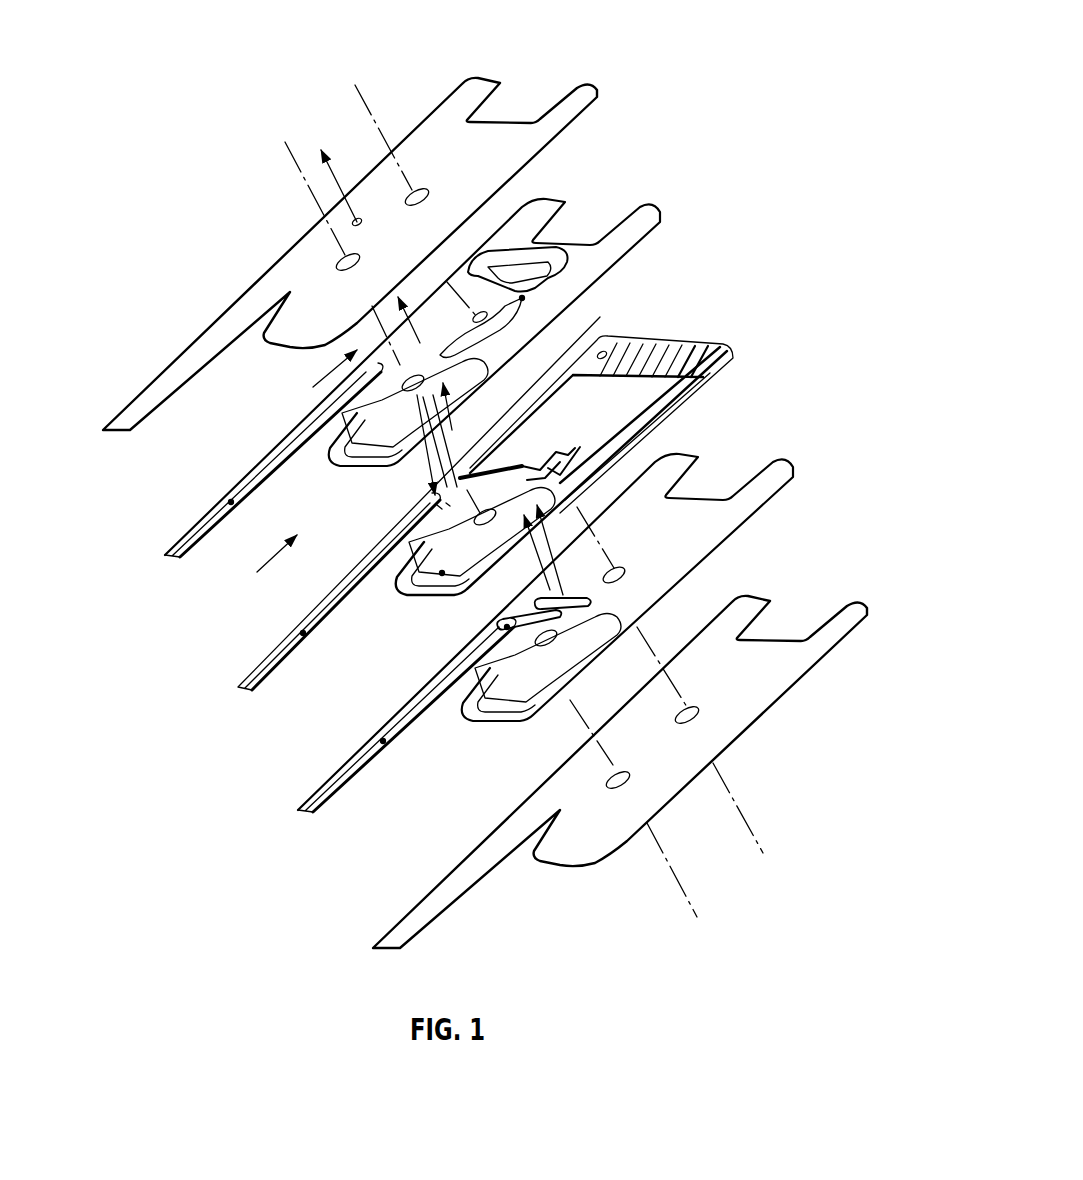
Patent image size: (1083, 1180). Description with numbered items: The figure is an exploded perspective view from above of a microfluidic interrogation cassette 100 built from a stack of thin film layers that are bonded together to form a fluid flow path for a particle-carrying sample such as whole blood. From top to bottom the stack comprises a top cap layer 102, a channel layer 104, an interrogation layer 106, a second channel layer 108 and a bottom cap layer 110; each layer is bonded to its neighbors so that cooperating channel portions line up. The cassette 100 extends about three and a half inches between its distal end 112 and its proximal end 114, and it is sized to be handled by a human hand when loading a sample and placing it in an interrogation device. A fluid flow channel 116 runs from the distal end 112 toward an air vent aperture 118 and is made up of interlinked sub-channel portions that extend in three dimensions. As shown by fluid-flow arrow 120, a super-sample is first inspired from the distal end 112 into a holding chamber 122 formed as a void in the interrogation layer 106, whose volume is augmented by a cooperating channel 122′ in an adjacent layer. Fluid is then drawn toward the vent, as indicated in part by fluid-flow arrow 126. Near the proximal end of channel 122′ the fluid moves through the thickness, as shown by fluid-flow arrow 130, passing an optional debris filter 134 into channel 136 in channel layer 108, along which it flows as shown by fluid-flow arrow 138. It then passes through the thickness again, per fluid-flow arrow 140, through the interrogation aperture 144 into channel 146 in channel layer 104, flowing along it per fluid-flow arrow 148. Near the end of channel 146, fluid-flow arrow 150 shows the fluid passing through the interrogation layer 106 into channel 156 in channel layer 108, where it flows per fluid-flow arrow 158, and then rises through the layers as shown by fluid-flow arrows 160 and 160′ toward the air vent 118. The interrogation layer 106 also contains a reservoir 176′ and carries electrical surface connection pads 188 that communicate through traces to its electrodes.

The microfluidic interrogation cassette 100 is at (718, 88).
The top cap layer 102 is at (583, 97).
The channel layer 104 is at (643, 213).
The interrogation layer 106 is at (720, 350).
The channel layer 108 is at (790, 470).
The bottom cap layer 110 is at (757, 597).
The distal end 112 is at (113, 398).
The proximal end 114 is at (517, 67).
The fluid flow channel 116 is at (212, 623).
The air vent aperture 118 is at (372, 226).
The fluid-flow arrow 120 is at (262, 567).
The holding chamber 122 is at (306, 634).
The cooperating channel 122′ is at (231, 502).
The fluid-flow arrow 126 is at (313, 387).
The fluid-flow arrow 130 is at (417, 465).
The debris filter 134 is at (429, 505).
The channel 136 is at (505, 628).
The fluid-flow arrow 138 is at (545, 648).
The fluid-flow arrow 140 is at (562, 592).
The interrogation aperture 144 is at (510, 487).
The channel 146 is at (522, 298).
The fluid-flow arrow 148 is at (543, 257).
The fluid-flow arrow 150 is at (433, 400).
The channel 156 is at (500, 616).
The fluid-flow arrow 158 is at (560, 589).
The fluid-flow arrow 160 is at (530, 560).
The fluid-flow arrow 160′ is at (457, 420).
The reservoir 176′ is at (442, 574).
The electrical surface connection pads 188 is at (677, 327).